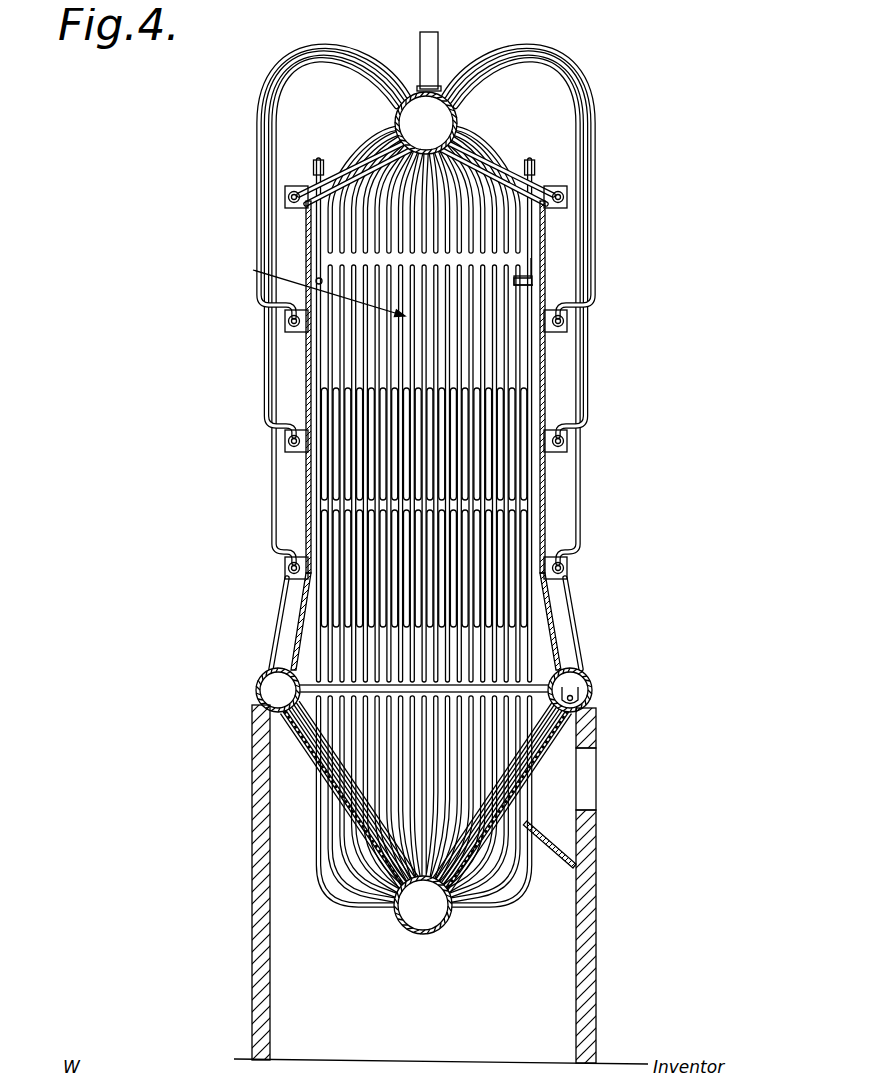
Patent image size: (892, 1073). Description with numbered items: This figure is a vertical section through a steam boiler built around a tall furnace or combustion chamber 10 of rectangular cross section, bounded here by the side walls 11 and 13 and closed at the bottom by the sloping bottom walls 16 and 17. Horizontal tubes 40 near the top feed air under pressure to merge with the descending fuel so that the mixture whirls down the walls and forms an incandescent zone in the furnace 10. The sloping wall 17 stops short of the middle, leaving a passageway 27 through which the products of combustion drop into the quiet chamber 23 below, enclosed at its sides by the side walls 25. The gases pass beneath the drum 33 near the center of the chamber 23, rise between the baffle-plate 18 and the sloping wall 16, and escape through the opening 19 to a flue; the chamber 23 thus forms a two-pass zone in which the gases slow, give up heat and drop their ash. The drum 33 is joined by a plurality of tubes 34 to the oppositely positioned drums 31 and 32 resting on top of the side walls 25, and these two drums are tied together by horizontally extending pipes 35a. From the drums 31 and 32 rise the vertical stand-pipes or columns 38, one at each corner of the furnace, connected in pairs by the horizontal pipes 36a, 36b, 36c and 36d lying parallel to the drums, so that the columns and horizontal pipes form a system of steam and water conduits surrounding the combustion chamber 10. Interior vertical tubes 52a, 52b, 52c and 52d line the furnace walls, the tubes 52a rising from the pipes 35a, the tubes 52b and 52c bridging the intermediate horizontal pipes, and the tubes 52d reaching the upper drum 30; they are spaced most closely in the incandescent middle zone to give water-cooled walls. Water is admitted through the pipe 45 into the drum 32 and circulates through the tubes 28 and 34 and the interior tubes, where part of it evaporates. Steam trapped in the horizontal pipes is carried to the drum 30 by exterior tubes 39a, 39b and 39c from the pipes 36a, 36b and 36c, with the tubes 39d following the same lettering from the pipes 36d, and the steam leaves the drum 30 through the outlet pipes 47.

The furnace or combustion chamber 10 is at (243, 266).
The side wall 11 is at (300, 386).
The side wall 13 is at (541, 392).
The sloping bottom wall 16 is at (550, 752).
The sloping bottom wall 17 is at (293, 768).
The baffle-plate 18 is at (538, 830).
The opening 19 is at (580, 787).
The quiet chamber 23 is at (283, 980).
The side walls 25 is at (246, 919).
The passageway 27 is at (358, 843).
The tubes 28 is at (367, 712).
The drum 30 is at (449, 107).
The drum 31 is at (254, 672).
The drum 32 is at (584, 678).
The drum 33 is at (428, 922).
The tubes 34 is at (310, 743).
The horizontally extending pipes 35a is at (525, 677).
The horizontal pipe 36a is at (557, 559).
The horizontal pipe 36b is at (557, 433).
The horizontal pipe 36c is at (557, 313).
The horizontal pipe 36d is at (556, 190).
The vertical pipes or columns 38 is at (297, 485).
The tubes 39a is at (268, 527).
The tubes 39b is at (258, 327).
The tubes 39c is at (250, 178).
The upper feed tube 39d is at (527, 170).
The horizontal tubes 40 is at (526, 272).
The pipe 45 is at (560, 680).
The outlet pipes 47 is at (425, 47).
The interior vertical tubes 52a is at (512, 638).
The interior vertical tubes 52b is at (510, 505).
The interior vertical tubes 52c is at (510, 366).
The interior vertical tubes 52d is at (510, 232).